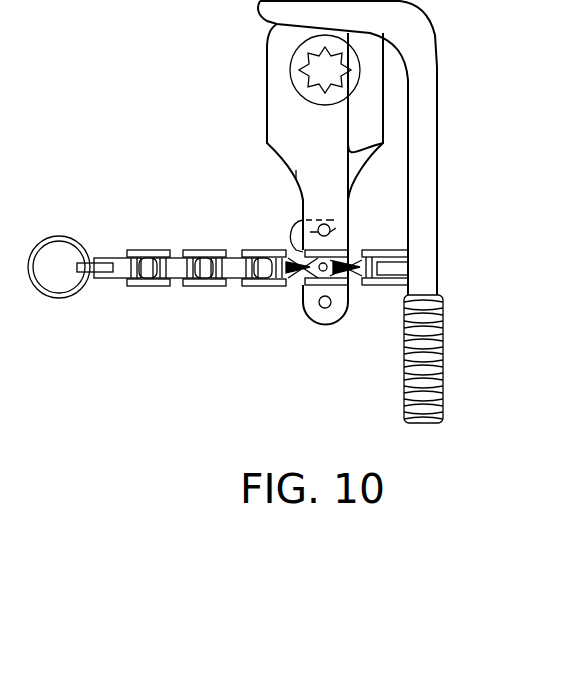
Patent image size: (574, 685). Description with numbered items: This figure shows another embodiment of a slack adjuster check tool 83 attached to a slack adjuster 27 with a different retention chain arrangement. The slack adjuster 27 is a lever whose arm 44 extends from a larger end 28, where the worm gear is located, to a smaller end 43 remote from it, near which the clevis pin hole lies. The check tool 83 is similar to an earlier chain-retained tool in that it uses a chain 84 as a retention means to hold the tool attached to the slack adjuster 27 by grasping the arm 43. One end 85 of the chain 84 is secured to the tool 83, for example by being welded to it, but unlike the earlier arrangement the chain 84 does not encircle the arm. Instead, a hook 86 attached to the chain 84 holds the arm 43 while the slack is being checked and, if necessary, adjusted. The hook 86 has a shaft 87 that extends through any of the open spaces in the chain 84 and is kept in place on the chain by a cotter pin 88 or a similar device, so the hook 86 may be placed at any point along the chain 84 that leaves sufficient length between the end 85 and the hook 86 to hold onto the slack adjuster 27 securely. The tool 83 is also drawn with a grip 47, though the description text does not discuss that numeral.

The slack adjuster lever 27 is at (265, 126).
The larger end 28 is at (266, 77).
The smaller end of the arm 43 is at (295, 178).
The arm 44 is at (350, 303).
The hand grip 47 is at (445, 333).
The slack adjuster check tool 83 is at (441, 273).
The chain 84 is at (167, 285).
The end of the chain 85 is at (387, 250).
The hook 86 is at (293, 233).
The shaft 87 is at (310, 270).
The cotter pin 88 is at (302, 264).